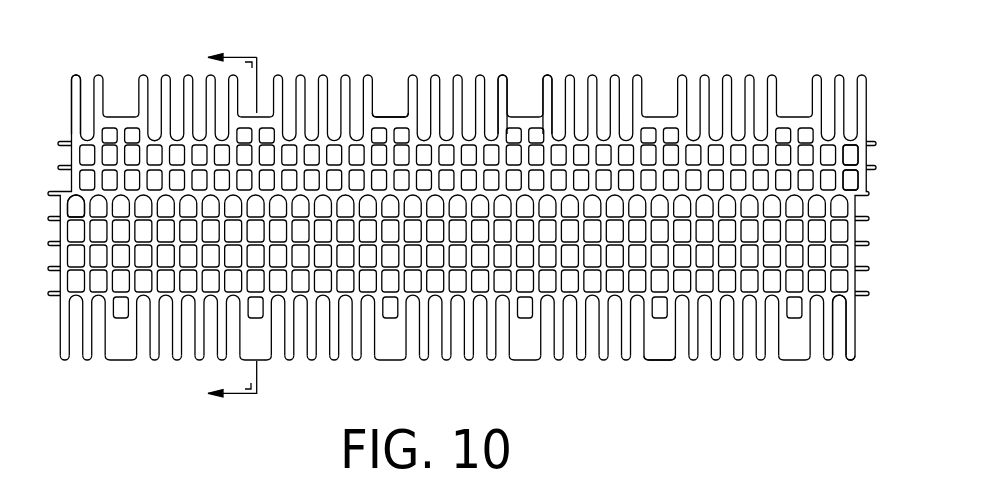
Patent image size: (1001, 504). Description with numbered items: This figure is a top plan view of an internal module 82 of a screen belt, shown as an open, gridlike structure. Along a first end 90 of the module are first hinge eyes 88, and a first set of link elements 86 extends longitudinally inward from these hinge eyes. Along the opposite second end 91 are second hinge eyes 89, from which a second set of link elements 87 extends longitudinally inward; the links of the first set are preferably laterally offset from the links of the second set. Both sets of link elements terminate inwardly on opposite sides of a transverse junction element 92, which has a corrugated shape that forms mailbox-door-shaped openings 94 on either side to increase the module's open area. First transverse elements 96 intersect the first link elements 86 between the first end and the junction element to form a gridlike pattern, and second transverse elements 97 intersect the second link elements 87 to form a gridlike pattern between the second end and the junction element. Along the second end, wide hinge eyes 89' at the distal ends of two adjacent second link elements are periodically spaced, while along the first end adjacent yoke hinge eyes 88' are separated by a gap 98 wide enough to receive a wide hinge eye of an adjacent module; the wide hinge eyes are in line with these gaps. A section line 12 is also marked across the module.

The internal module 82 is at (760, 45).
The section line 12 is at (244, 226).
The first set of link elements 86 is at (864, 147).
The second set of link elements 87 is at (854, 303).
The first hinge eyes 88 is at (881, 104).
The yoke hinge eyes 88' is at (525, 90).
The second hinge eyes 89 is at (874, 356).
The wide hinge eyes 89' is at (679, 377).
The first end 90 is at (70, 78).
The second end 91 is at (62, 362).
The transverse junction element 92 is at (858, 194).
The mailbox-door-shaped openings 94 is at (68, 203).
The first transverse elements 96 is at (62, 146).
The second transverse elements 97 is at (62, 262).
The gap 98 is at (389, 80).